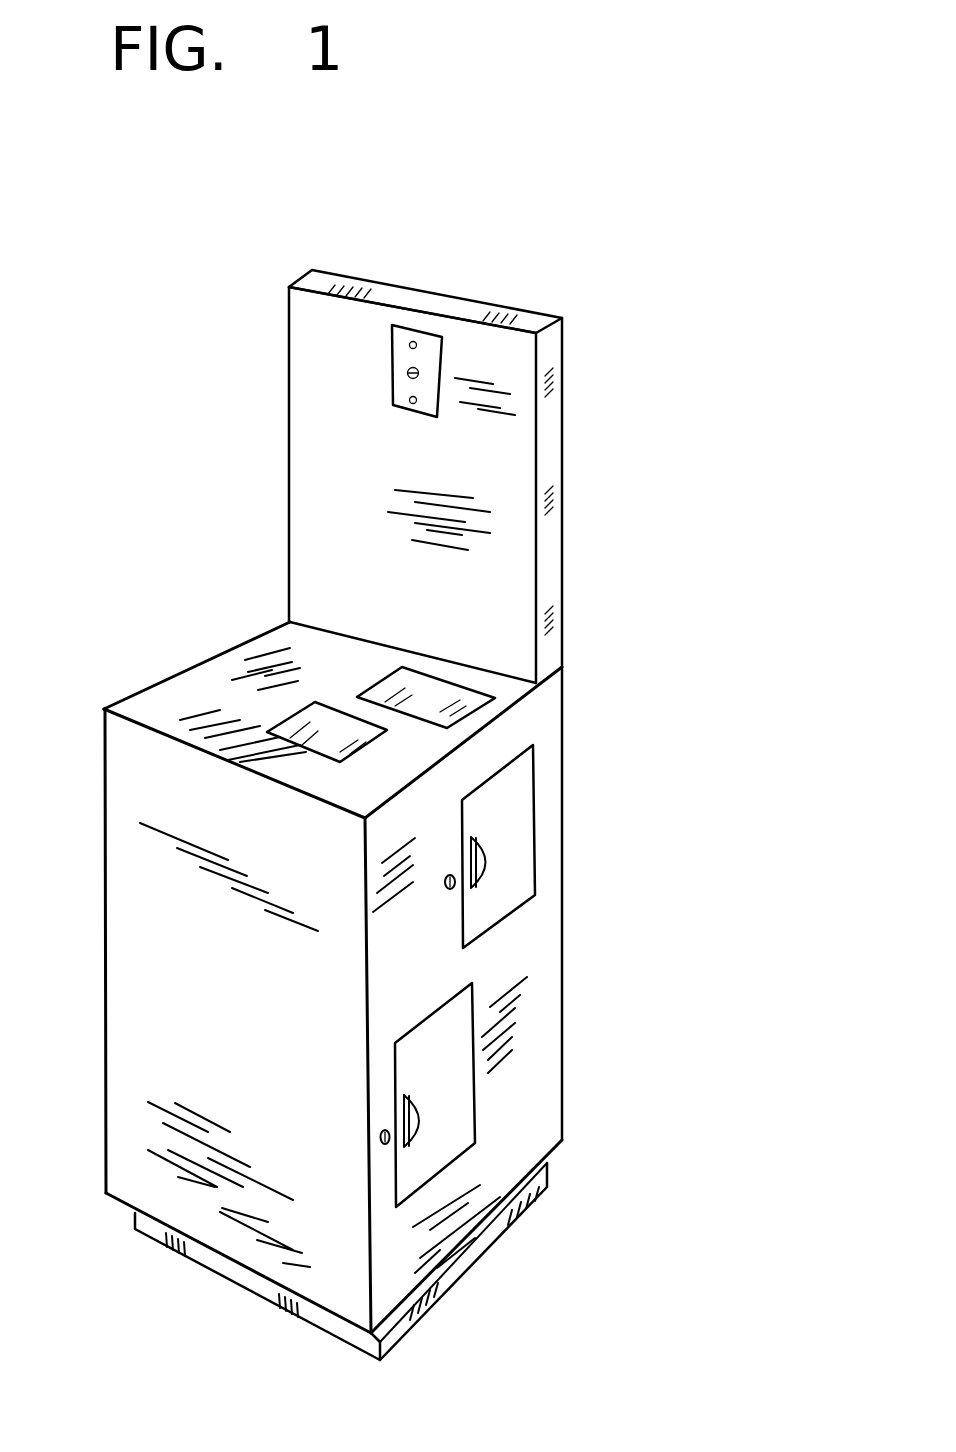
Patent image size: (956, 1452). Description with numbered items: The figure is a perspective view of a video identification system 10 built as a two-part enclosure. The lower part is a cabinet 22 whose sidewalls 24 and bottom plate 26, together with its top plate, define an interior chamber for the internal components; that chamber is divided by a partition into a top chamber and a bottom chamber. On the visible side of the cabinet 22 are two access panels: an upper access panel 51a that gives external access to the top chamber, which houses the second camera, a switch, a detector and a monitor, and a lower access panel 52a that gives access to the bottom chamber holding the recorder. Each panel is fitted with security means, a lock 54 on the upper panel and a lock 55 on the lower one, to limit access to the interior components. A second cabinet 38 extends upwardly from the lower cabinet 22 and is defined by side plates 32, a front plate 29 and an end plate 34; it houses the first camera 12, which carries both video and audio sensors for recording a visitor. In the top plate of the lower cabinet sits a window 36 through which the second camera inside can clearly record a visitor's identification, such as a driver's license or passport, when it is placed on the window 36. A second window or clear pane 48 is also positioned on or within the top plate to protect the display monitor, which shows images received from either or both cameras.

The video identification system 10 is at (607, 223).
The first camera 12 is at (427, 340).
The cabinet 22 is at (103, 708).
The sidewalls 24 is at (248, 1043).
The bottom plate 26 is at (438, 1273).
The front plate 29 is at (487, 610).
The side plates 32 is at (548, 439).
The end plate 34 is at (350, 278).
The window 36 is at (283, 728).
The second cabinet 38 is at (289, 285).
The second window 48 is at (497, 698).
The access panel 51a is at (523, 822).
The access panel 52a is at (462, 1097).
The lock 54 is at (445, 883).
The lock 55 is at (380, 1137).